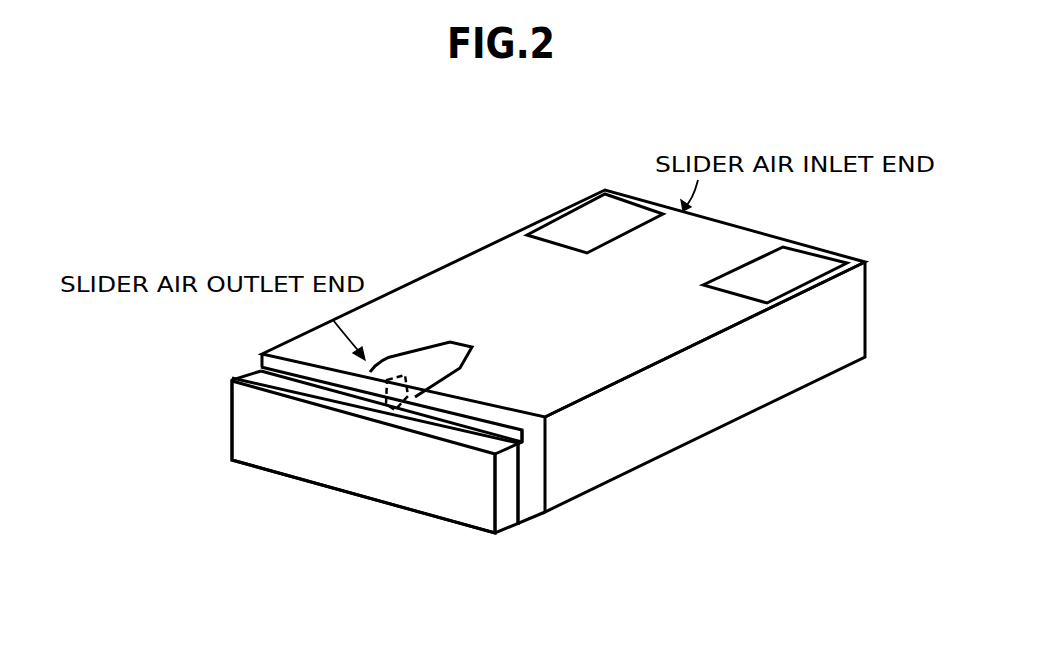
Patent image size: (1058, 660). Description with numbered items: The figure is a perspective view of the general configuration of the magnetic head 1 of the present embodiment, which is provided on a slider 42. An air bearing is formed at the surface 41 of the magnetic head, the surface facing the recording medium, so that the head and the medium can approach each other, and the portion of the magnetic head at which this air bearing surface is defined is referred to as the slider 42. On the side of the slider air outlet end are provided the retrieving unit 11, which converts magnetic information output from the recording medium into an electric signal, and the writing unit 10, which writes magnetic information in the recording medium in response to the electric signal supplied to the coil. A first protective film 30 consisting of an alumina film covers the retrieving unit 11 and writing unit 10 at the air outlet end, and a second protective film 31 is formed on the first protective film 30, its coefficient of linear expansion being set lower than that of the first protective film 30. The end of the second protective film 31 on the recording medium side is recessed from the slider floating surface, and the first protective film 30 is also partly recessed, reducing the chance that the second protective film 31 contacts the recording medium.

The magnetic head 1 is at (847, 305).
The writing unit 10 is at (350, 469).
The retrieving unit 11 is at (394, 412).
The first protective film 30 is at (526, 494).
The second protective film 31 is at (484, 500).
The air bearing surface 41 is at (500, 275).
The slider 42 is at (868, 378).